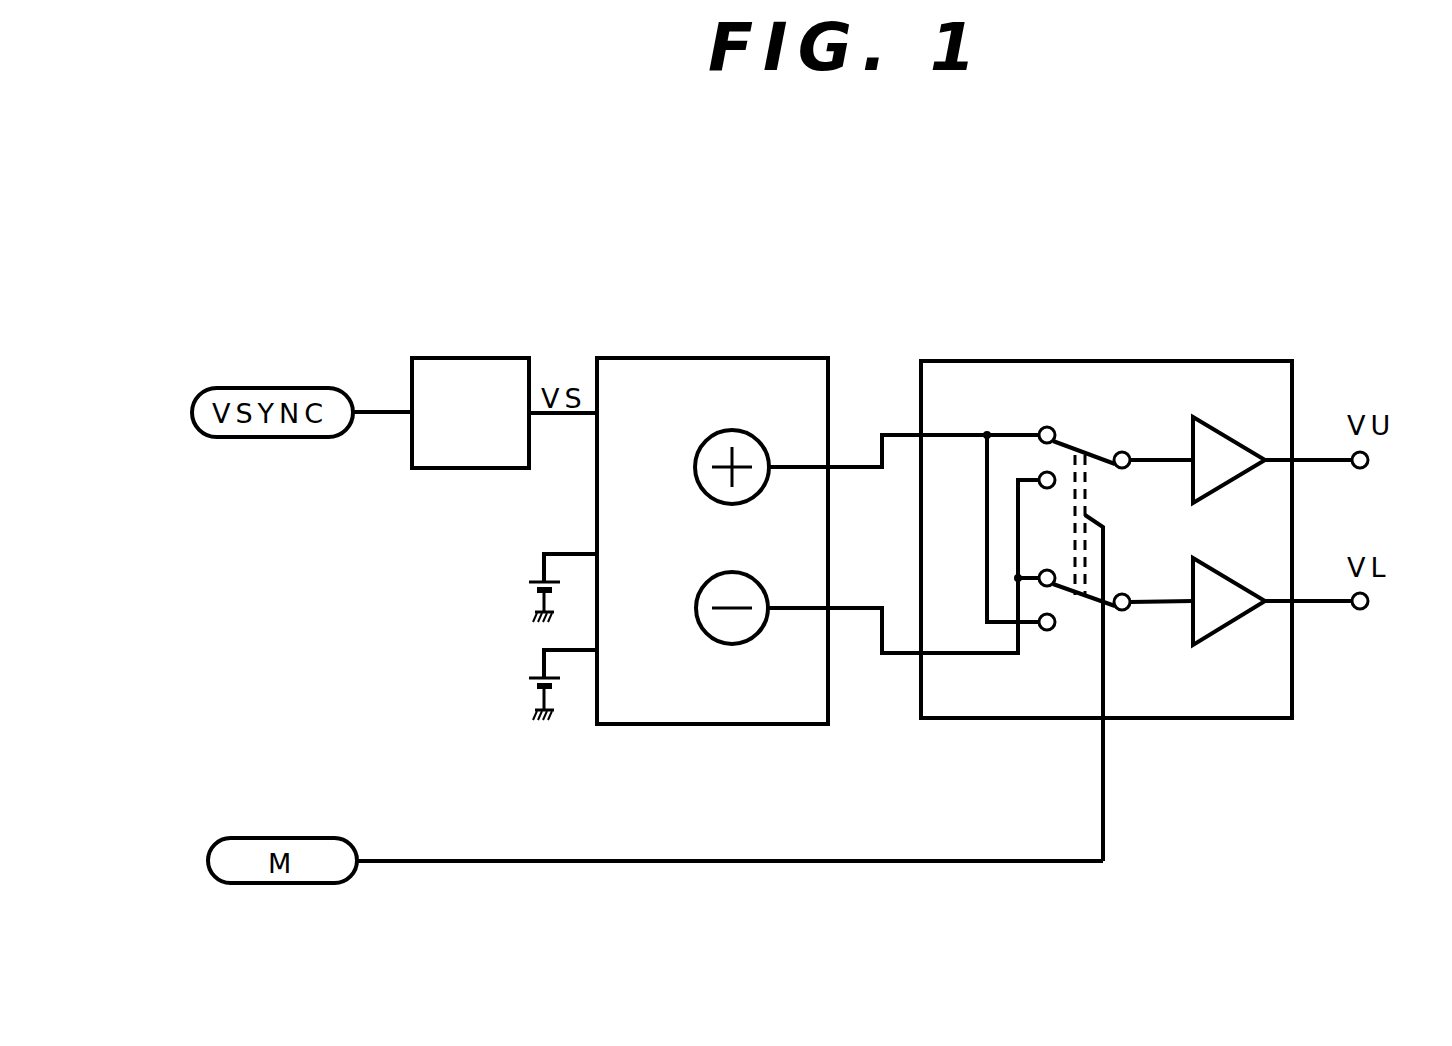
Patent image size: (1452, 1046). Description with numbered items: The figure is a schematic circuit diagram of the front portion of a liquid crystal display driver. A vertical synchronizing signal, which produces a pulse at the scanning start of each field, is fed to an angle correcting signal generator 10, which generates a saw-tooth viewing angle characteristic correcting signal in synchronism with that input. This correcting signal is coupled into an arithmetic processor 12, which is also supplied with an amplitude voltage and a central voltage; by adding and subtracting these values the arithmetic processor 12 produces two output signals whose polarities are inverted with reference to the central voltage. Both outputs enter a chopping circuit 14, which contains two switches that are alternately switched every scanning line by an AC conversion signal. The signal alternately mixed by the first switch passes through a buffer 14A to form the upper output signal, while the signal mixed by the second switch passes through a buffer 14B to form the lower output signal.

The angle correcting signal generator 10 is at (448, 358).
The arithmetic processor 12 is at (670, 358).
The chopping circuit 14 is at (1130, 567).
The buffer 14A is at (1230, 437).
The buffer 14B is at (1228, 628).